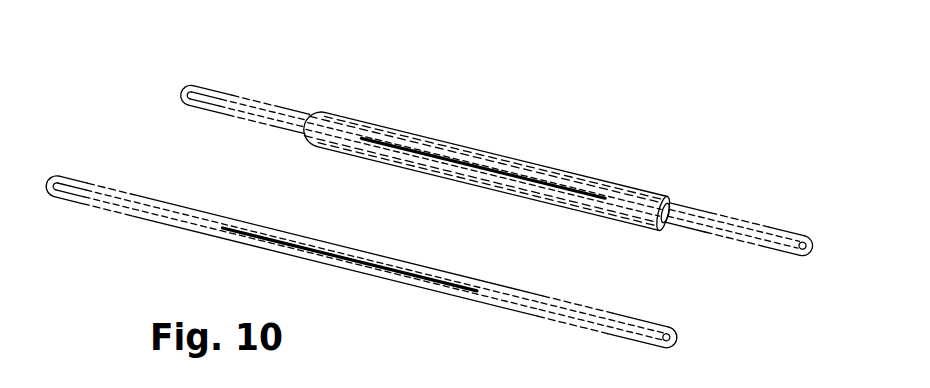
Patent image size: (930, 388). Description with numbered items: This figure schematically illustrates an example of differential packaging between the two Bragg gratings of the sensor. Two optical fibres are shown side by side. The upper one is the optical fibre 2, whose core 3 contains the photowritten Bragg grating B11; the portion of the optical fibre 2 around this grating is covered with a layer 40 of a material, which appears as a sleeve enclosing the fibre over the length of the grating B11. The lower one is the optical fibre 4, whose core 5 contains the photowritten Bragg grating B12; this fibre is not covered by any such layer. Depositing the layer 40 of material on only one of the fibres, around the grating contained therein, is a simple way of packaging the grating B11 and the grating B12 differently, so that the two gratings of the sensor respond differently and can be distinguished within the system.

The optical fibre 2 is at (252, 92).
The core 3 is at (742, 229).
The optical fibre 4 is at (140, 192).
The core 5 is at (613, 327).
The layer of material 40 is at (600, 180).
The Bragg grating B11 is at (487, 160).
The Bragg grating B12 is at (384, 262).